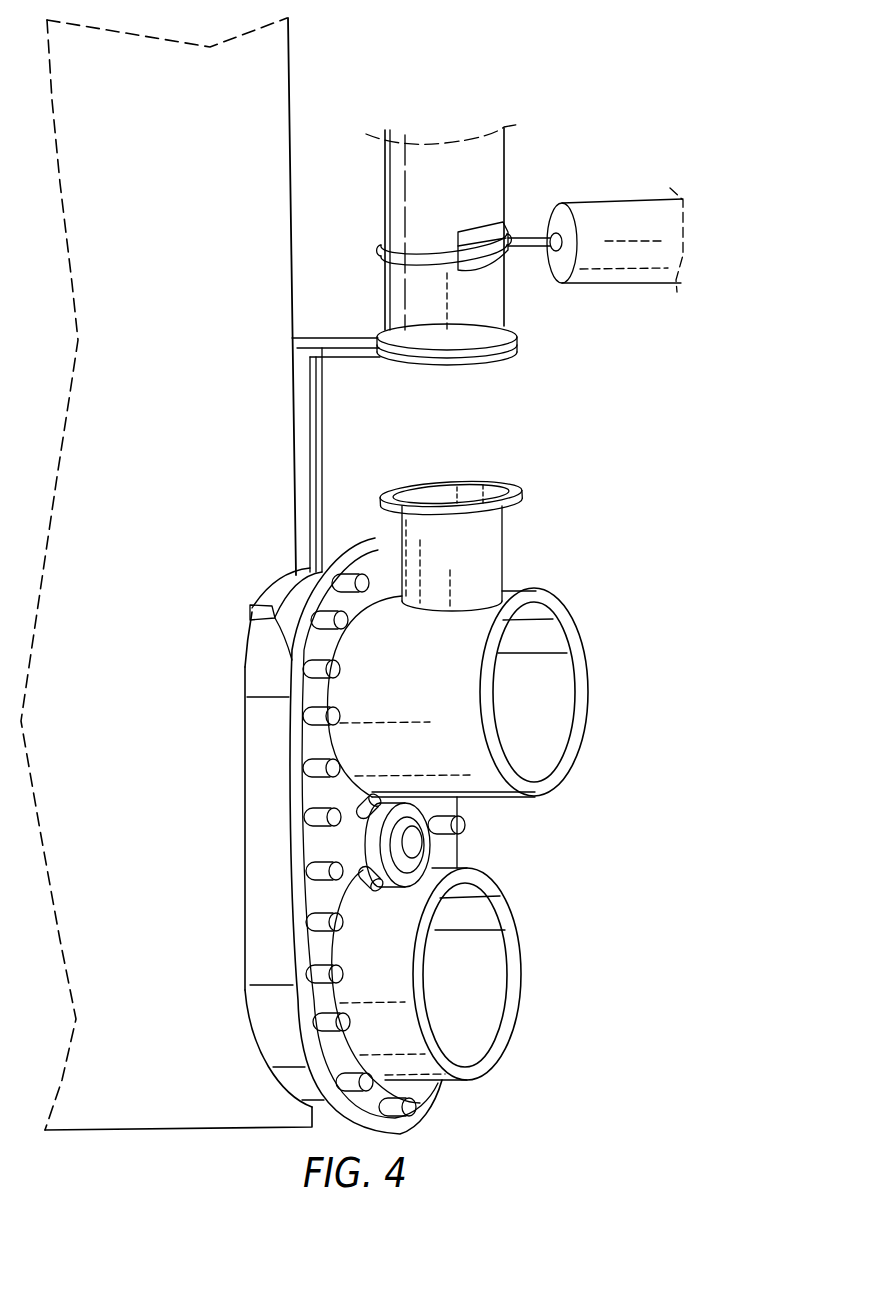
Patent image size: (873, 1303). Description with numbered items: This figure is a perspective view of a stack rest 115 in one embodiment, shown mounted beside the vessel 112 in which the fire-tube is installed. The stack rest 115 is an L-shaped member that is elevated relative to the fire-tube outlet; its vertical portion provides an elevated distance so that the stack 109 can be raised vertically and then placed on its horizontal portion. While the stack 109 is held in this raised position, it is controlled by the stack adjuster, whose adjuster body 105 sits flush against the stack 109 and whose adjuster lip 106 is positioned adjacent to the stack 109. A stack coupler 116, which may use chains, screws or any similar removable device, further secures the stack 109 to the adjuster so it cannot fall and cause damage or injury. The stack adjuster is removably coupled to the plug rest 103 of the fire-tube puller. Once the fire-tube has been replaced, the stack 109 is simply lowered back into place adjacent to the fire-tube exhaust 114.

The plug rest 103 is at (617, 283).
The adjuster body 105 is at (482, 226).
The adjuster lip 106 is at (470, 272).
The stack 109 is at (504, 172).
The vessel 112 is at (199, 486).
The fire-tube exhaust 114 is at (502, 532).
The stack rest 115 is at (322, 410).
The stack coupler 116 is at (382, 250).